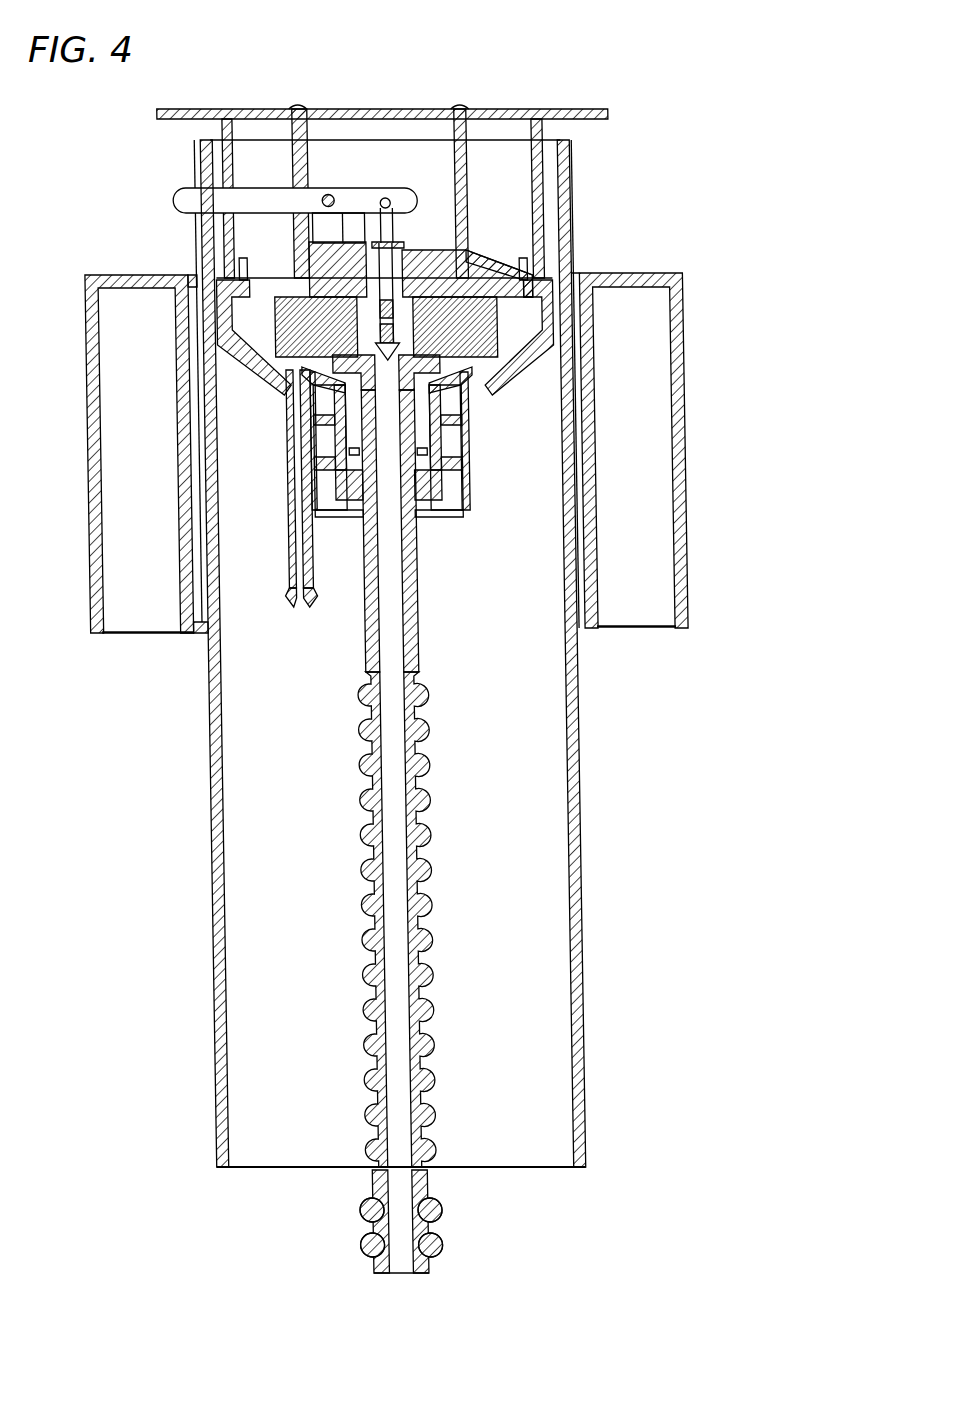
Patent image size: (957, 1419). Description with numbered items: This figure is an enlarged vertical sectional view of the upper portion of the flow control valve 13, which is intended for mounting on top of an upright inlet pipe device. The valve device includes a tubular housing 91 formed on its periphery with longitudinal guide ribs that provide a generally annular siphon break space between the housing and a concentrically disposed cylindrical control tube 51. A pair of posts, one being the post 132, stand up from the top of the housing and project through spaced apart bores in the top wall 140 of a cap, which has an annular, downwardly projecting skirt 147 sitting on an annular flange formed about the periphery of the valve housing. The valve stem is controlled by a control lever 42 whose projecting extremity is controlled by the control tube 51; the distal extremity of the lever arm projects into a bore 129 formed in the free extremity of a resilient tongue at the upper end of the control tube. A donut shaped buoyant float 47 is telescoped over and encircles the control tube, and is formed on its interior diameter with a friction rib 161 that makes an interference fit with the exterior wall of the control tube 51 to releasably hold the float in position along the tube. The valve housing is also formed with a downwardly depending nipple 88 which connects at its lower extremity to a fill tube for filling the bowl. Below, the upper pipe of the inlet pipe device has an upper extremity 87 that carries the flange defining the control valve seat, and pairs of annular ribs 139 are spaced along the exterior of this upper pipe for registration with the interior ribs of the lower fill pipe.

The top wall 140 is at (341, 108).
The post 132 is at (289, 131).
The skirt 147 is at (541, 127).
The control lever 42 is at (265, 196).
The bore 129 is at (197, 221).
The tubular housing 91 is at (548, 258).
The donut shaped float 47 is at (703, 385).
The nipple 88 is at (269, 534).
The control valve 13 is at (506, 389).
The upper extremity 87 is at (409, 605).
The annular ribs 139 is at (416, 903).
The control tube 51 is at (580, 851).
The rib 161 is at (192, 635).